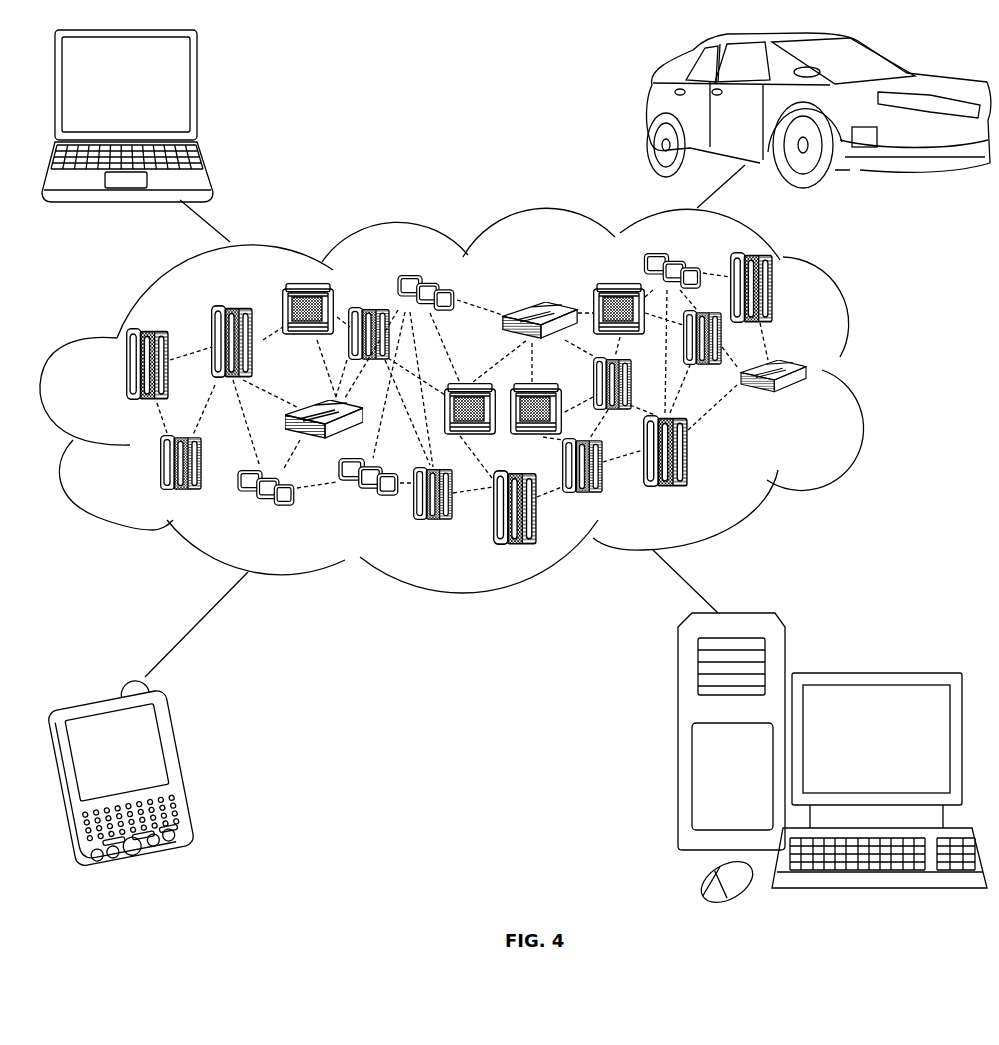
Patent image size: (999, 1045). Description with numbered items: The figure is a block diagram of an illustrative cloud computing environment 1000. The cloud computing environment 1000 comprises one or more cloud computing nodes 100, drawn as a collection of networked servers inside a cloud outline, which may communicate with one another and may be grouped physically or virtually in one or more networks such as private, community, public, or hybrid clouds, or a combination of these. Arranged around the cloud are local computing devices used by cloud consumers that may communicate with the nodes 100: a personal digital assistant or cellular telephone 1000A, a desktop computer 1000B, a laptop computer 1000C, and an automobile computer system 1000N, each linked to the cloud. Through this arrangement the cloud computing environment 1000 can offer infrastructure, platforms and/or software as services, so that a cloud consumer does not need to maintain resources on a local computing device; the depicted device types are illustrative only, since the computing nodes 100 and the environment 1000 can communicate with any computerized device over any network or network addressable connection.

The cloud computing environment 1000 is at (872, 378).
The cloud computing nodes 100 is at (813, 407).
The personal digital assistant (PDA) or cellular telephone 1000A is at (187, 768).
The desktop computer 1000B is at (887, 648).
The laptop computer 1000C is at (197, 93).
The automobile computer system 1000N is at (645, 110).